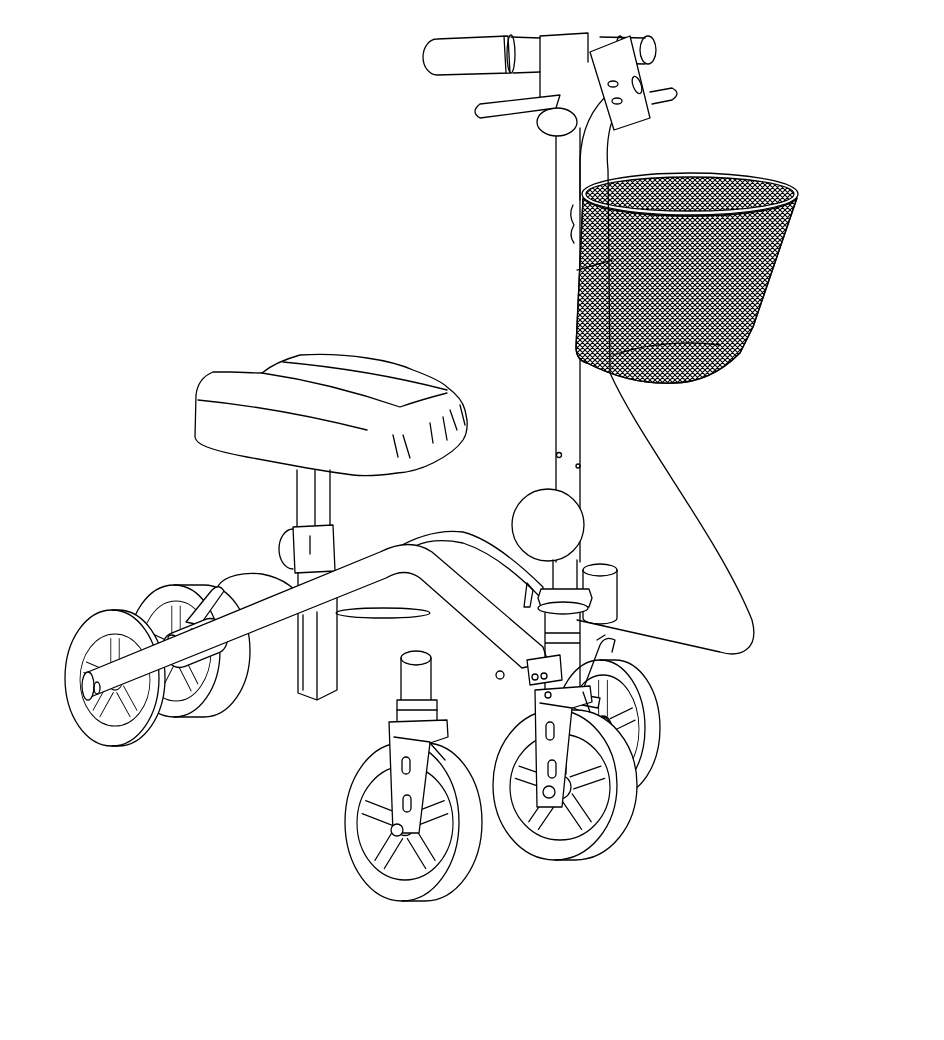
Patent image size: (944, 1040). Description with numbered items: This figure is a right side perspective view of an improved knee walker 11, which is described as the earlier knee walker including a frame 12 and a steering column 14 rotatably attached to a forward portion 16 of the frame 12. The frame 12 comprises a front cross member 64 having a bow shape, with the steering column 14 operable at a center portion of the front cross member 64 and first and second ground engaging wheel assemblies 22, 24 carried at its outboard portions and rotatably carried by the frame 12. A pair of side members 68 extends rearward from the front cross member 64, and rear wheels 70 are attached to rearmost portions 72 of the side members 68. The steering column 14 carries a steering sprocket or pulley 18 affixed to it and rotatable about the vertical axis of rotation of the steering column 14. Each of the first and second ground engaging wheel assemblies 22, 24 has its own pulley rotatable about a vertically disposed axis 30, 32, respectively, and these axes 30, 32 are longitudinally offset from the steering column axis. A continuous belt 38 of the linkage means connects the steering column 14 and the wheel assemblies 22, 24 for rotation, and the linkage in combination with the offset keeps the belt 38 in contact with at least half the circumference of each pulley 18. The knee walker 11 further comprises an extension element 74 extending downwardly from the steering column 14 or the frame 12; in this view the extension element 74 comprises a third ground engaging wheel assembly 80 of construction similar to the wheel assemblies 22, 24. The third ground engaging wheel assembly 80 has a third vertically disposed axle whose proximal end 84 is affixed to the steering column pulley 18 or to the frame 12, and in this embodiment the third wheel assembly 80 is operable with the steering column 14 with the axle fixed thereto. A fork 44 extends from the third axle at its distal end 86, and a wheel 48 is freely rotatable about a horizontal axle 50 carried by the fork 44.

The improved knee walker 11 is at (235, 275).
The frame 12 is at (387, 574).
The steering column 14 is at (562, 401).
The forward portion 16 is at (497, 530).
The steering sprocket or pulley 18 is at (587, 672).
The first ground engaging wheel assembly 22 is at (333, 772).
The second ground engaging wheel assembly 24 is at (663, 727).
The vertically disposed axis 30 is at (415, 603).
The vertically disposed axis 32 is at (600, 566).
The continuous belt 38 is at (448, 696).
The fork 44 is at (583, 748).
The wheel 48 is at (603, 840).
The horizontal axle 50 is at (549, 795).
The front cross member 64 is at (500, 680).
The side members 68 is at (283, 610).
The rear wheels 70 is at (133, 748).
The rearmost portions 72 is at (246, 627).
The extension element 74 is at (545, 867).
The third ground engaging wheel assembly 80 is at (634, 800).
The proximal end 84 is at (573, 698).
The distal end 86 is at (633, 757).